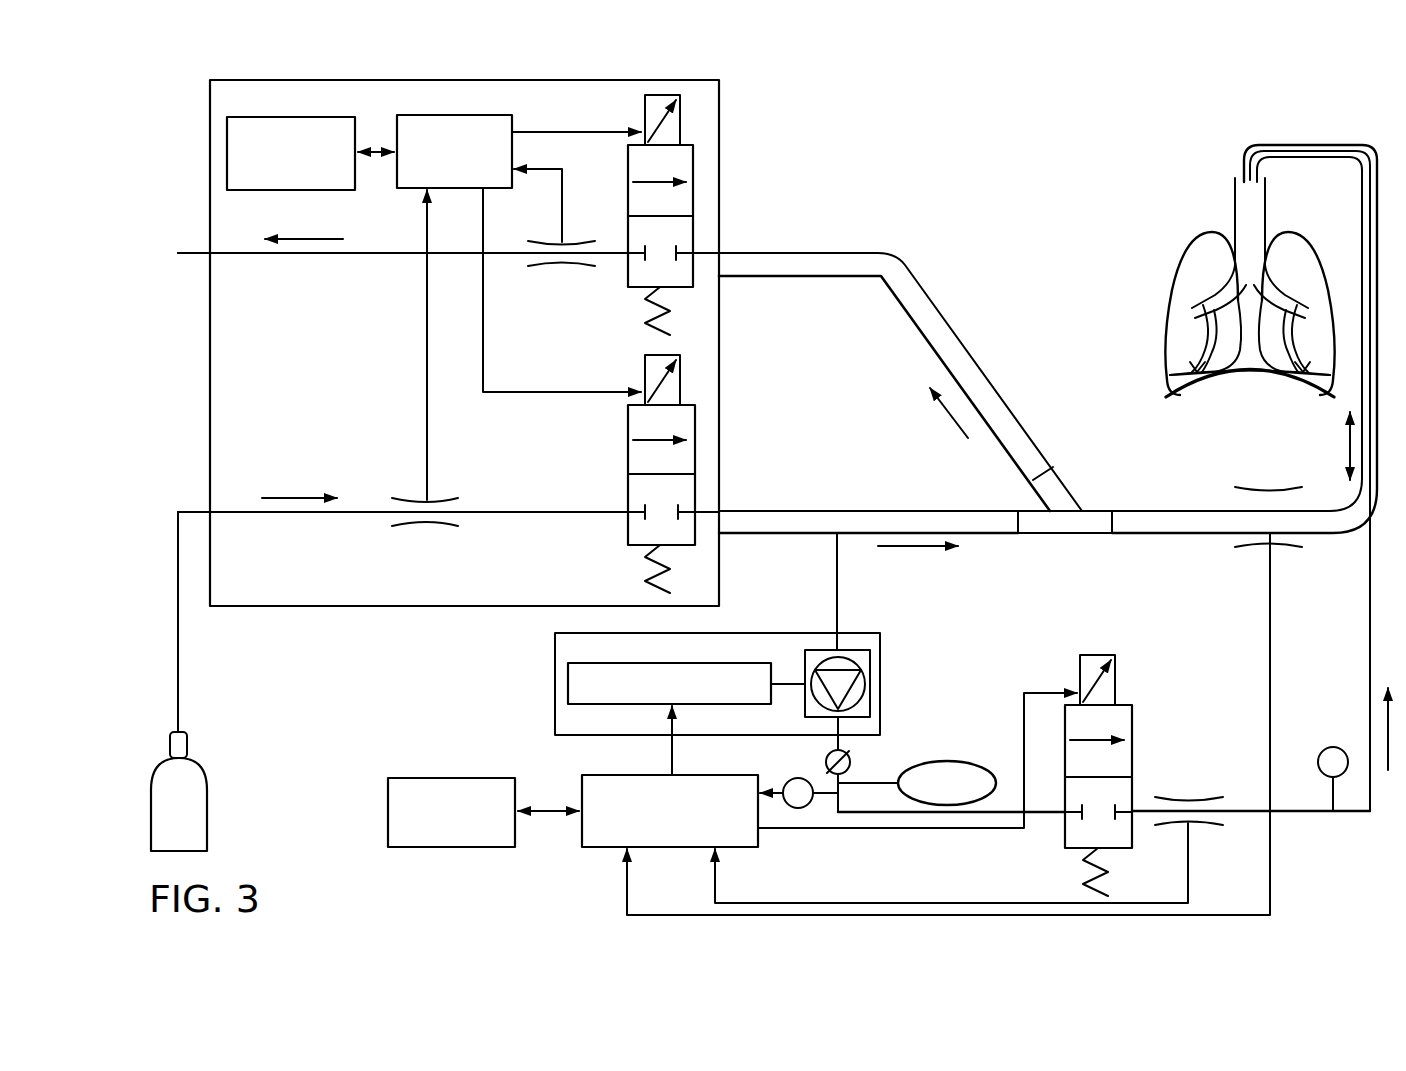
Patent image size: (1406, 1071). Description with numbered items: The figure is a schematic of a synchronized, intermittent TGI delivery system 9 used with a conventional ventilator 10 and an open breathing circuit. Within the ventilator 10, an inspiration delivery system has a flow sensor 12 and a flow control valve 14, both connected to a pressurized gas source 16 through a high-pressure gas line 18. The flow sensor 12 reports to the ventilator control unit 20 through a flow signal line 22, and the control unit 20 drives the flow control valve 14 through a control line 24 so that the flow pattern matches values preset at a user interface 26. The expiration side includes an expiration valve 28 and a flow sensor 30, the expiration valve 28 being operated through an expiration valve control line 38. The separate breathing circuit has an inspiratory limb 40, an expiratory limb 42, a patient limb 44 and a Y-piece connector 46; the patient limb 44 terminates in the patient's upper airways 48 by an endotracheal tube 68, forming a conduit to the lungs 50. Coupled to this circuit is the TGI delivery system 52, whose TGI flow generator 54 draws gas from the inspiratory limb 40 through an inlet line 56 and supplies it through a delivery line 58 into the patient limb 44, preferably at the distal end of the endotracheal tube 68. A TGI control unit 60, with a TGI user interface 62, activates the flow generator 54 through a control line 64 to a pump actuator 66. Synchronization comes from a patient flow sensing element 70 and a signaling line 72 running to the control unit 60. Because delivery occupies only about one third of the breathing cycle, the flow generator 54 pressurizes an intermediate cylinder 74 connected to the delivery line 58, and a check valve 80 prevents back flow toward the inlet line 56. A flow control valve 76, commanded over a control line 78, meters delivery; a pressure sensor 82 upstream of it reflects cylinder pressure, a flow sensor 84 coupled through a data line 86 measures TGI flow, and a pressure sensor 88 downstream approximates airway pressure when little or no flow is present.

The TGI delivery system 9 is at (957, 265).
The ventilator 10 is at (190, 358).
The flow sensor 12 is at (420, 528).
The flow control valve 14 is at (698, 410).
The pressurized gas source 16 is at (207, 815).
The high-pressure gas line 18 is at (179, 674).
The ventilator control unit 20 is at (410, 188).
The flow signal line 22 is at (427, 350).
The control line 24 is at (558, 392).
The user interface 26 is at (258, 190).
The expiration valve 28 is at (690, 198).
The flow sensor 30 is at (560, 266).
The expiration valve control line 38 is at (571, 135).
The inspiratory limb 40 is at (850, 508).
The expiratory limb 42 is at (957, 347).
The patient limb 44 is at (1315, 528).
The Y-piece connector 46 is at (1072, 520).
The upper airways 48 is at (1247, 210).
The lungs 50 is at (1201, 280).
The TGI delivery system 52 is at (1014, 765).
The TGI flow generator 54 is at (718, 684).
The inlet line 56 is at (840, 592).
The delivery line 58 is at (1368, 617).
The TGI control unit 60 is at (583, 786).
The TGI user interface 62 is at (450, 778).
The control line 64 is at (670, 740).
The pump actuator 66 is at (568, 695).
The endotracheal tube 68 is at (1243, 165).
The patient flow sensing element 70 is at (1267, 489).
The signaling line 72 is at (1272, 853).
The intermediate cylinder 74 is at (945, 762).
The flow control valve 76 is at (1132, 777).
The control line 78 is at (957, 828).
The check valve 80 is at (852, 758).
The pressure sensor 82 is at (798, 777).
The flow sensor 84 is at (1188, 800).
The data line 86 is at (835, 900).
The pressure sensor 88 is at (1333, 750).